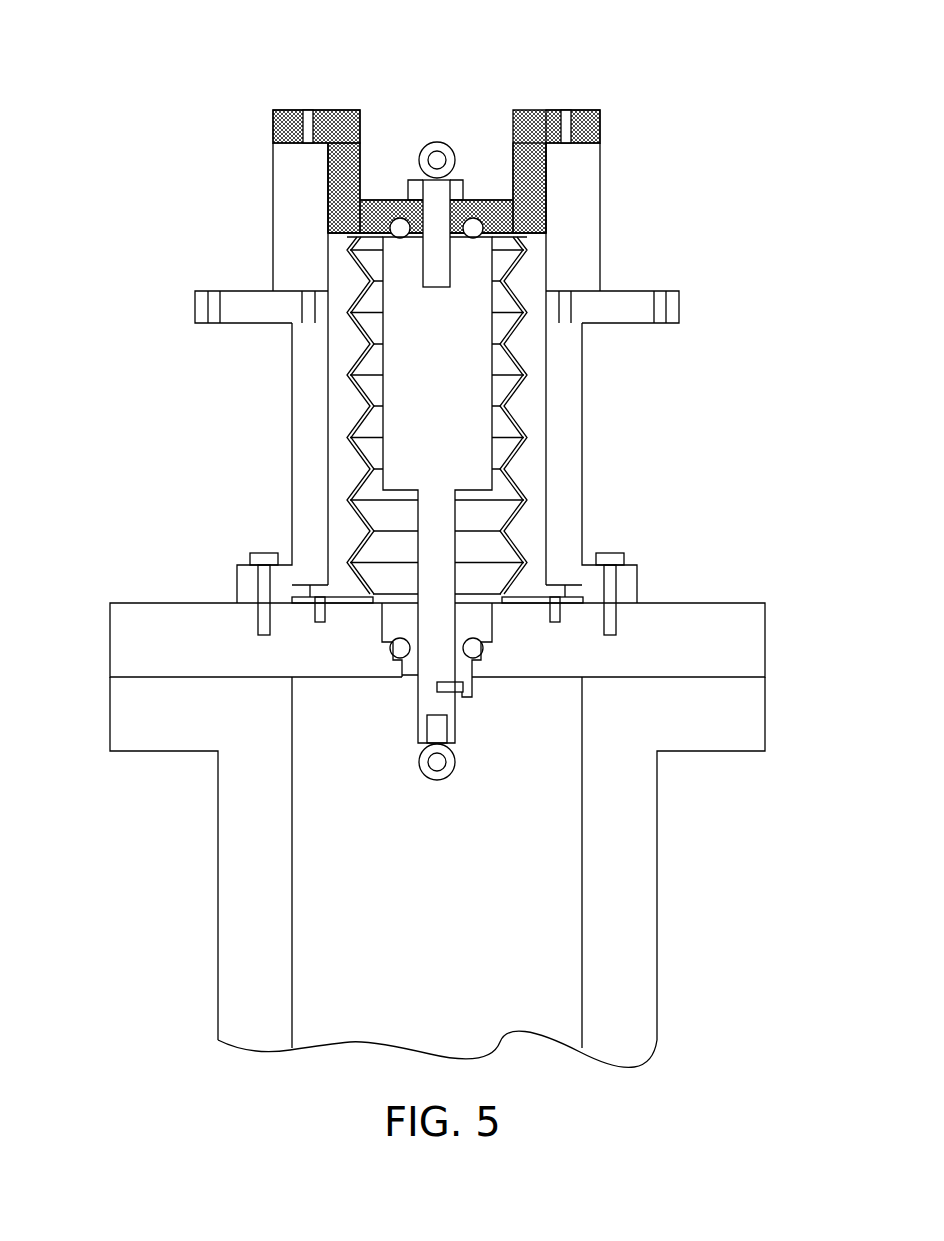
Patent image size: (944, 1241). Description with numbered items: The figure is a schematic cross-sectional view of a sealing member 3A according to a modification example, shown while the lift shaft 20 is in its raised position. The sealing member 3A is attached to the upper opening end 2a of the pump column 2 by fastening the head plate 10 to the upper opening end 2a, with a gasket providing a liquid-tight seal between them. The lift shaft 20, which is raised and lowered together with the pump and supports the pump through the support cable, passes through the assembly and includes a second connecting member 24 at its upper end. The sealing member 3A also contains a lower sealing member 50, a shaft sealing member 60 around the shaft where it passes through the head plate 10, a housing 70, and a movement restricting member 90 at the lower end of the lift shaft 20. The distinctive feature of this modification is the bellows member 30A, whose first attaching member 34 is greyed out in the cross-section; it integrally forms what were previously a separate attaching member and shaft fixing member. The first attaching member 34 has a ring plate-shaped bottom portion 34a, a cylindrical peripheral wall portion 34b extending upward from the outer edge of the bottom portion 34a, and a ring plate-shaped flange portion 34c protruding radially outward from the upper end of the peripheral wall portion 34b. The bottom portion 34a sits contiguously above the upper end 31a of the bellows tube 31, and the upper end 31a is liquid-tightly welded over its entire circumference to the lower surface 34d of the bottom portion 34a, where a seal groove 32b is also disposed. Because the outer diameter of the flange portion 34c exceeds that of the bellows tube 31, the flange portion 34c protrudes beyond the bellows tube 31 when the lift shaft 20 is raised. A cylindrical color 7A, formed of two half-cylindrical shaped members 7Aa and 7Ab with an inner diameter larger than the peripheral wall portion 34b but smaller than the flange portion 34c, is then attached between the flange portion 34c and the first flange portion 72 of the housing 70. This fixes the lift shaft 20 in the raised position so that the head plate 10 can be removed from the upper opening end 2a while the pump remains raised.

The sealing member 3A is at (132, 77).
The pump column 2 is at (243, 912).
The upper opening end 2a is at (293, 680).
The head plate 10 is at (126, 638).
The lift shaft 20 is at (372, 480).
The second connecting member 24 is at (431, 253).
The bellows member 30A is at (531, 443).
The bellows tube 31 is at (529, 381).
The upper end 31a is at (352, 240).
The seal groove 32b is at (402, 240).
The first attaching member 34 is at (495, 56).
The bottom portion 34a is at (478, 199).
The peripheral wall portion 34b is at (362, 142).
The flange portion 34c is at (287, 109).
The lower surface 34d is at (533, 238).
The lower sealing member 50 is at (526, 608).
The shaft sealing member 60 is at (476, 657).
The housing 70 is at (286, 432).
The first flange portion 72 is at (243, 312).
The color 7A is at (612, 187).
The half-cylindrical shaped member 7Aa is at (318, 226).
The half-cylindrical shaped member 7Ab is at (592, 226).
The movement restricting member 90 is at (468, 695).